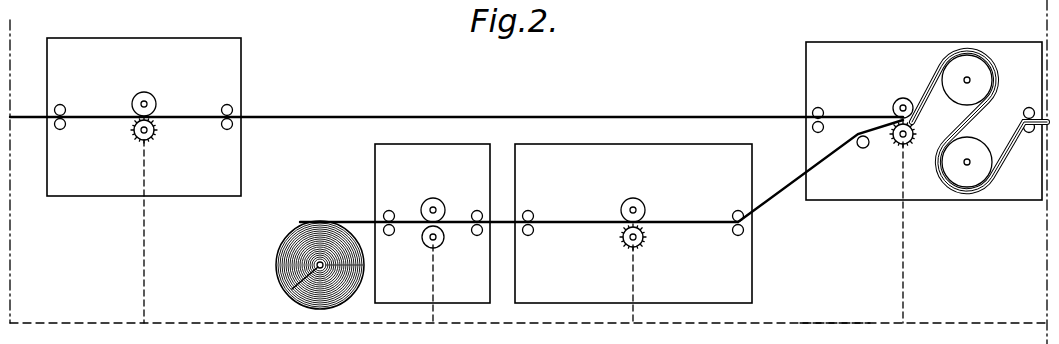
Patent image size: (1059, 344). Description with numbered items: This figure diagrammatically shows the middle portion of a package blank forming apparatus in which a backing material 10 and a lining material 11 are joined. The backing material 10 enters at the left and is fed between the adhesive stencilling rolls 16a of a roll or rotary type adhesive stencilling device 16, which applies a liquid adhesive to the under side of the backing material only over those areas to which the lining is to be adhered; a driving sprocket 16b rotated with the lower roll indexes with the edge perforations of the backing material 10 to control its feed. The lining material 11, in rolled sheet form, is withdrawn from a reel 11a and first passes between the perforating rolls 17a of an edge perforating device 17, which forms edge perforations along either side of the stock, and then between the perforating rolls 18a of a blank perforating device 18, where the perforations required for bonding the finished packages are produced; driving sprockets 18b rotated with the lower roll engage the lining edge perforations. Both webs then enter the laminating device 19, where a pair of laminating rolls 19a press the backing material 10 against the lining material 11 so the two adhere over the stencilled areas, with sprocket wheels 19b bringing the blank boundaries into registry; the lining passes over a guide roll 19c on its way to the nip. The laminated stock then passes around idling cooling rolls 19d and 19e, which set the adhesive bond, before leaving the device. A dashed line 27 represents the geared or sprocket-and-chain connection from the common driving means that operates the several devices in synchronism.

The backing material 10 is at (30, 117).
The lining material 11 is at (276, 264).
The reel 11a is at (292, 289).
The adhesive stencilling device 16 is at (241, 163).
The adhesive stencilling rolls 16a is at (155, 101).
The driving sprocket 16b is at (134, 145).
The edge perforating device 17 is at (375, 170).
The perforating rolls 17a is at (436, 208).
The blank perforating device 18 is at (752, 258).
The perforating rolls 18a is at (643, 204).
The driving sprockets 18b is at (624, 251).
The laminating device 19 is at (806, 80).
The laminating rolls 19a is at (896, 98).
The driving sprockets 19b is at (901, 150).
The guide roller 19c is at (867, 148).
The cooling roll 19d is at (981, 75).
The cooling roll 19e is at (973, 174).
The dashed line 27 is at (833, 323).